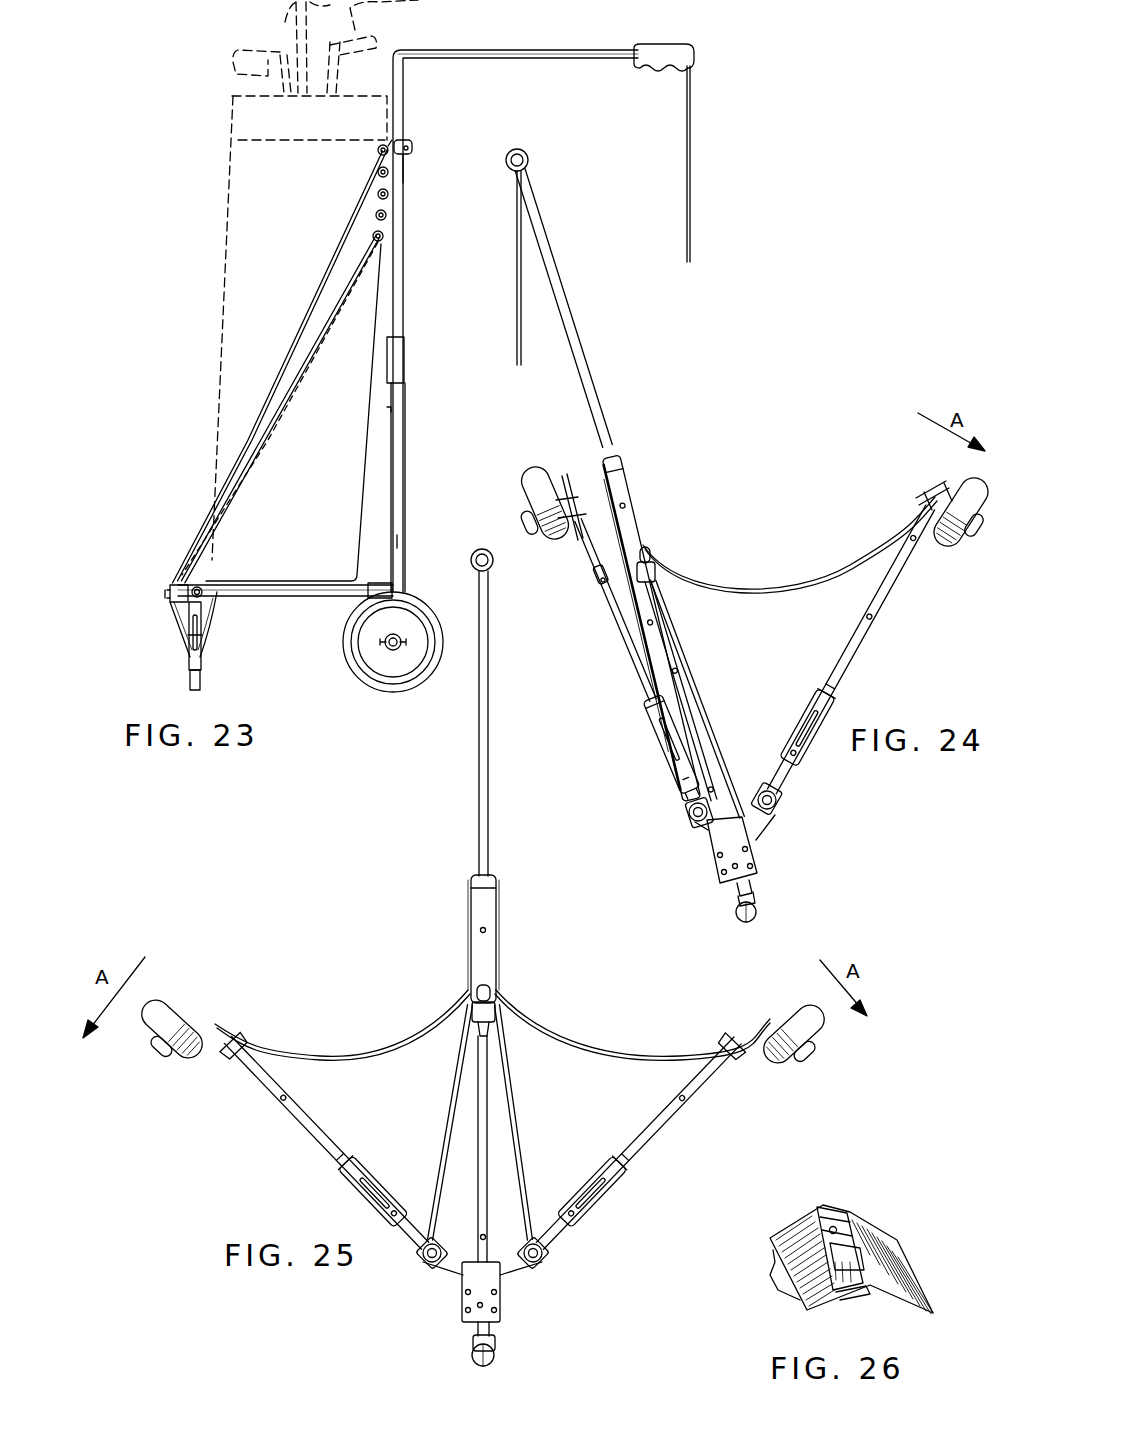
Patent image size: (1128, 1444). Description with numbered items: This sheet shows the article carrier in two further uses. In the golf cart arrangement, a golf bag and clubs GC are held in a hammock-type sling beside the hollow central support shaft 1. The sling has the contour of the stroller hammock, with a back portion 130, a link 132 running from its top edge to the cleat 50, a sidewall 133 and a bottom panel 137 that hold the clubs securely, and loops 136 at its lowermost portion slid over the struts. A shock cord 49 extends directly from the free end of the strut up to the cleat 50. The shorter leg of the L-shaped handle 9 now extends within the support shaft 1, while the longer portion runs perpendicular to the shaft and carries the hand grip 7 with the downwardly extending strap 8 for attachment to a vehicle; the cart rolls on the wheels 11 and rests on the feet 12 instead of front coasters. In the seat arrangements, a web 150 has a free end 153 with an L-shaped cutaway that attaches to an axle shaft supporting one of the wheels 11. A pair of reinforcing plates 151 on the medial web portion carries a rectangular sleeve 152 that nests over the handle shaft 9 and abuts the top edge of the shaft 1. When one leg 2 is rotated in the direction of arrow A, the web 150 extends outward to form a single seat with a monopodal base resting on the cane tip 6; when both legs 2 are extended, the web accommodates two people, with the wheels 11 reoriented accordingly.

In FIG. 23, the golf clubs / bag GC is at (249, 280).
In FIG. 23, the hollow central support shaft 1 is at (406, 297).
In FIG. 23, the legs 2 is at (406, 460).
In FIG. 24, the legs 2 is at (752, 828).
In FIG. 24, the cane type tip 6 is at (736, 914).
In FIG. 23, the hand grip 7 is at (651, 50).
In FIG. 23, the strap 8 is at (693, 160).
In FIG. 23, the L-shaped telescopic handle 9 is at (527, 52).
In FIG. 23, the wheels 11 is at (351, 660).
In FIG. 23, the feet 12 is at (202, 662).
In FIG. 23, the shock cord 49 is at (337, 262).
In FIG. 23, the cleat 50 is at (411, 146).
In FIG. 23, the back portion 130 is at (363, 410).
In FIG. 23, the link 132 is at (392, 200).
In FIG. 23, the sidewall 133 is at (325, 498).
In FIG. 23, the loops 136 is at (172, 588).
In FIG. 23, the bottom panel 137 is at (308, 582).
In FIG. 24, the web 150 is at (808, 582).
In FIG. 25, the web 150 is at (378, 1043).
In FIG. 26, the web 150 is at (790, 1276).
In FIG. 24, the reinforcing plates 151 is at (611, 457).
In FIG. 25, the reinforcing plates 151 is at (483, 955).
In FIG. 26, the reinforcing plates 151 is at (822, 1210).
In FIG. 26, the rectangular sleeve 152 is at (851, 1250).
In FIG. 24, the free end 153 is at (570, 490).